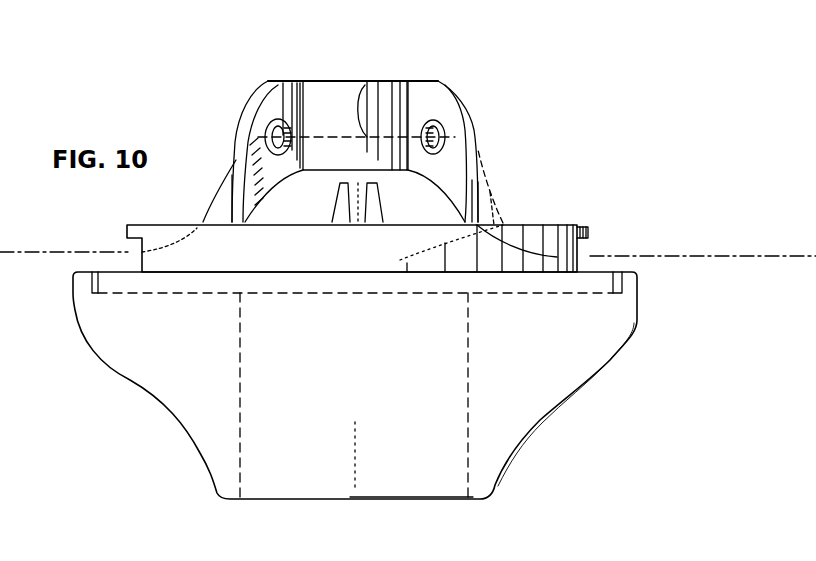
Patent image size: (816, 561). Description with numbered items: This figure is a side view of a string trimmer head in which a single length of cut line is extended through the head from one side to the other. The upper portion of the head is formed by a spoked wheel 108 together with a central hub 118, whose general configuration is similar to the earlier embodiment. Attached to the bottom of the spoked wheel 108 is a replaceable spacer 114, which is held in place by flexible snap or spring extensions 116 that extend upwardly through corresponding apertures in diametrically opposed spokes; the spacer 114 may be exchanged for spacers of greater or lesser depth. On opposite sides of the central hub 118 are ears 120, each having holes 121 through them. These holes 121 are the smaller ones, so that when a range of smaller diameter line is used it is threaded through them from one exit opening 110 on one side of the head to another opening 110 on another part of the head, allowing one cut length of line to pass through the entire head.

The spoked wheel 108 is at (556, 227).
The exit opening 110 is at (578, 251).
The replaceable spacer 114 is at (632, 330).
The spring extensions 116 is at (336, 199).
The central hub 118 is at (413, 193).
The ears 120 is at (266, 84).
The holes 121 is at (266, 141).